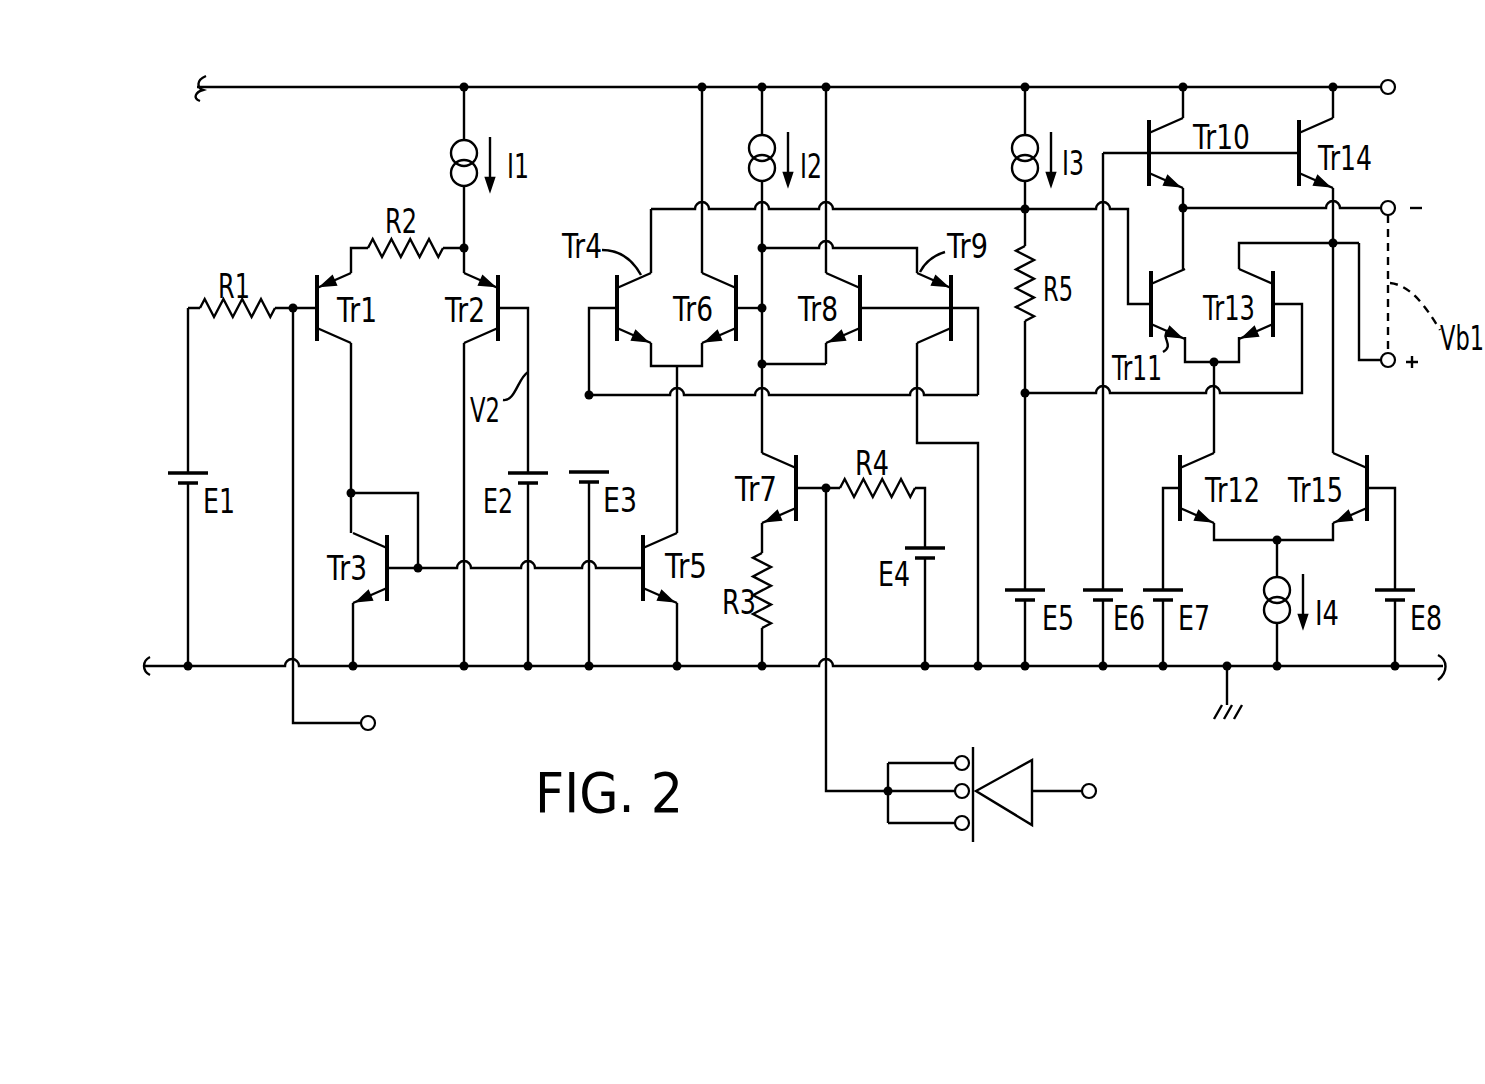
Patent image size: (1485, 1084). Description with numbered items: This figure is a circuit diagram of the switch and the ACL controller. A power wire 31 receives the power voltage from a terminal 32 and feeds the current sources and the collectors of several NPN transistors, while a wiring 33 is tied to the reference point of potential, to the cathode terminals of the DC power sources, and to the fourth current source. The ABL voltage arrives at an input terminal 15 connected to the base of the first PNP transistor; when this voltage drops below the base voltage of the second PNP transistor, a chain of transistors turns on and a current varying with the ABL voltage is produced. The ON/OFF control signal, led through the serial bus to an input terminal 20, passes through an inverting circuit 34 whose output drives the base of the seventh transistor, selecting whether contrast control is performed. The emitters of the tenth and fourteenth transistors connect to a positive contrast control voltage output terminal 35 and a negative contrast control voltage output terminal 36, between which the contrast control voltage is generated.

The input terminal 15 is at (365, 732).
The input terminal 20 is at (1085, 782).
The power wire 31 is at (581, 86).
The terminal 32 is at (1380, 82).
The wiring 33 is at (1343, 667).
The inverting circuit 34 is at (967, 752).
The contrast control voltage output terminal 35 is at (1394, 370).
The contrast control voltage output terminal 36 is at (1394, 202).